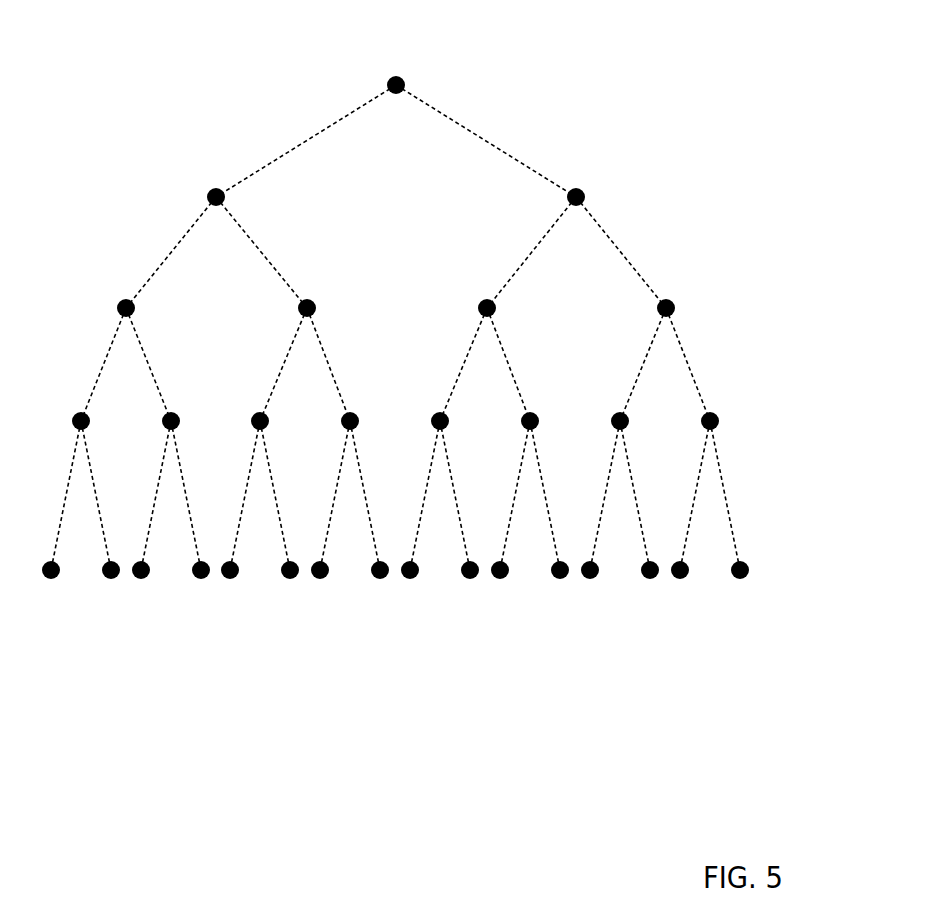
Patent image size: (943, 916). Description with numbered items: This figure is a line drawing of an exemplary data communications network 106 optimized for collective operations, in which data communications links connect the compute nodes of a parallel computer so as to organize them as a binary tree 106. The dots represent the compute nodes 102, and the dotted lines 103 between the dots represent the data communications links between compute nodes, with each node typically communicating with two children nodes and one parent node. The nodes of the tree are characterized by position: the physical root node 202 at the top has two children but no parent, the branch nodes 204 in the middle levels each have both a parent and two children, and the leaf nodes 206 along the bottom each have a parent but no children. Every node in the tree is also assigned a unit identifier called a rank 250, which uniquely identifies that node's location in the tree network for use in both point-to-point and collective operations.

The data communications network optimized for collective operations 106 is at (454, 414).
The dotted lines 103 is at (316, 133).
The physical root node 202 is at (414, 75).
The branch nodes 204 is at (762, 145).
The leaf nodes 206 is at (470, 578).
The compute nodes 102 is at (454, 656).
The rank 250 is at (535, 207).